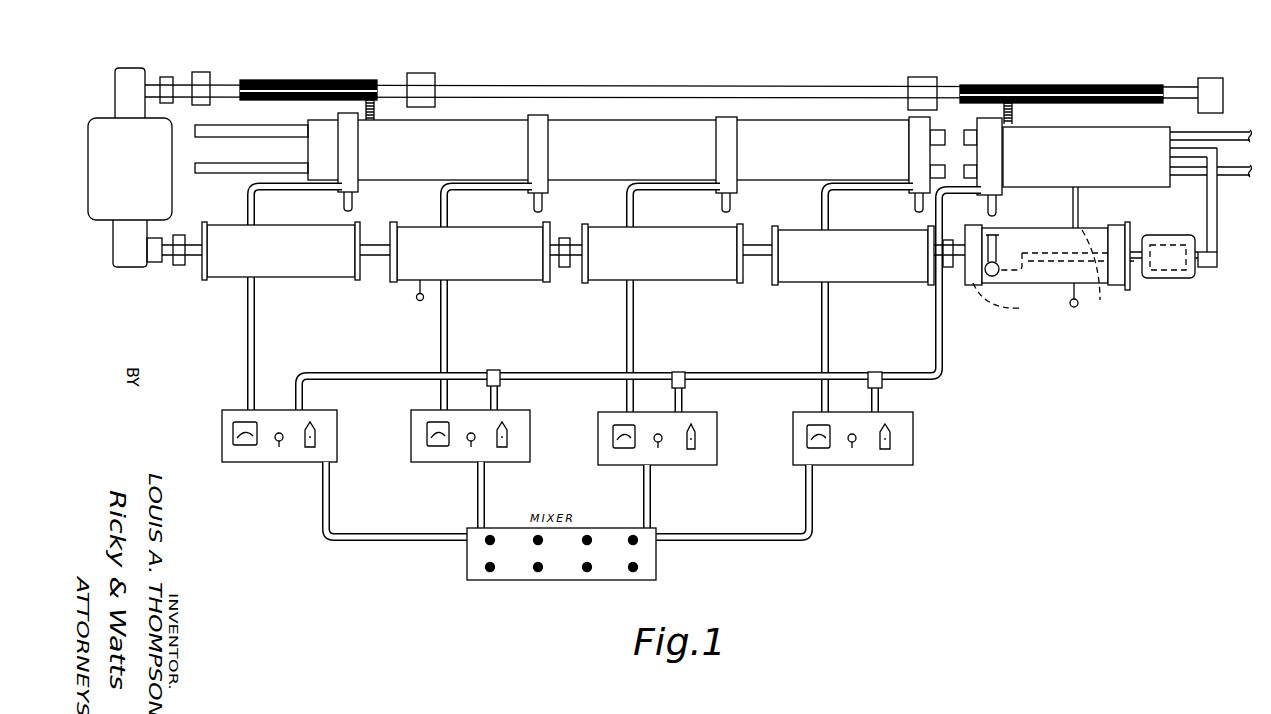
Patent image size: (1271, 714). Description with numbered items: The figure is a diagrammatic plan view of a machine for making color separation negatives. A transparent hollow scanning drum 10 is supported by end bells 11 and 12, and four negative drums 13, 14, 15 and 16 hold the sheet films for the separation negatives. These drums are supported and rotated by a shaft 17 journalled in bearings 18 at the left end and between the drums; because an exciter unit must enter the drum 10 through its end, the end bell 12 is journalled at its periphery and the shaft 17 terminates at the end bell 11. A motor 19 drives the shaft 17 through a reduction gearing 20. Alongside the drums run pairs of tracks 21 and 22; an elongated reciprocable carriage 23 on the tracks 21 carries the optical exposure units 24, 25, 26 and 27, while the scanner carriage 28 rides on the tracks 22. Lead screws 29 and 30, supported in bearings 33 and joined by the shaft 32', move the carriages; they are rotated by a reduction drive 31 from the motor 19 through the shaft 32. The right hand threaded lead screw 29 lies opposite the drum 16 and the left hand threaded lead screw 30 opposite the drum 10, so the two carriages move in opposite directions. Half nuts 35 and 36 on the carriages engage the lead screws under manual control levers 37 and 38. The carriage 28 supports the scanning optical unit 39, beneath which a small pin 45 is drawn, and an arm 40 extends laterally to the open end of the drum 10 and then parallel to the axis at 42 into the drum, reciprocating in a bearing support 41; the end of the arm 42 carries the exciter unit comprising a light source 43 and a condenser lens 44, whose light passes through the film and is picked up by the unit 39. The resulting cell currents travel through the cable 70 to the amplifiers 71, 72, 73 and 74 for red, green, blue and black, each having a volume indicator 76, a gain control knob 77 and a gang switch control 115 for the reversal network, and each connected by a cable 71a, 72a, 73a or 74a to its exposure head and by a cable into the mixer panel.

The scanning drum 10 is at (1078, 242).
The end bell 11 is at (972, 275).
The end bell 12 is at (1120, 250).
The negative drum 13 is at (853, 255).
The negative drum 14 is at (662, 253).
The negative drum 15 is at (470, 252).
The negative drum 16 is at (281, 251).
The shaft 17 is at (195, 258).
The bearings 18 is at (180, 235).
The motor 19 is at (130, 169).
The reduction gearing 20 is at (148, 258).
The tracks 21 is at (268, 168).
The tracks 22 is at (1220, 143).
The reciprocable carriage 23 is at (462, 137).
The optical exposure unit 24 is at (916, 165).
The optical exposure unit 25 is at (722, 165).
The optical exposure unit 26 is at (538, 165).
The optical exposure unit 27 is at (345, 168).
The scanner carriage 28 is at (1086, 178).
The lead screw 29 is at (262, 82).
The lead screw 30 is at (1030, 88).
The reduction drive 31 is at (130, 85).
The shaft 32 is at (190, 69).
The shaft 32' is at (671, 69).
The bearings 33 is at (422, 80).
The half nut 35 is at (378, 104).
The half nut 36 is at (1015, 114).
The manual control lever 37 is at (414, 298).
The manual control lever 38 is at (1077, 306).
The scanning optical unit 39 is at (990, 153).
The arm 40 is at (1212, 200).
The bearing support 41 is at (1170, 280).
The arm 42 is at (1106, 276).
The light source 43 is at (1009, 305).
The condenser lens 44 is at (1002, 238).
The pin 45 is at (997, 204).
The cable 70 is at (706, 374).
The amplifier 71 is at (848, 466).
The amplifier 72 is at (618, 466).
The amplifier 73 is at (441, 463).
The amplifier 74 is at (256, 463).
The cable 71a is at (830, 326).
The cable 72a is at (636, 326).
The cable 73a is at (450, 326).
The cable 74a is at (258, 326).
The volume indicator 76 is at (237, 445).
The control knob 77 is at (317, 434).
The gang switch control 115 is at (281, 445).